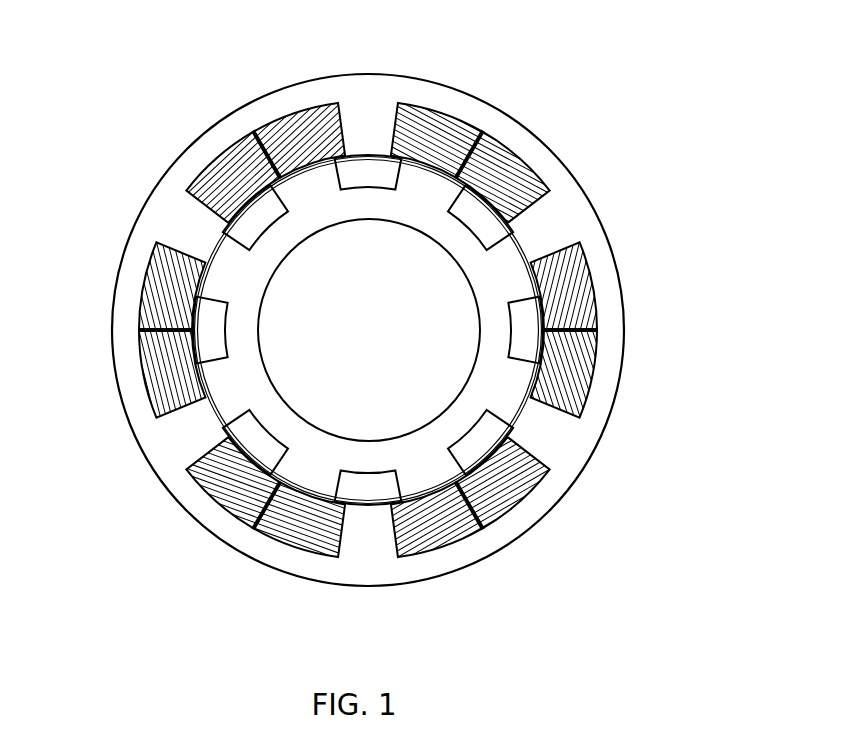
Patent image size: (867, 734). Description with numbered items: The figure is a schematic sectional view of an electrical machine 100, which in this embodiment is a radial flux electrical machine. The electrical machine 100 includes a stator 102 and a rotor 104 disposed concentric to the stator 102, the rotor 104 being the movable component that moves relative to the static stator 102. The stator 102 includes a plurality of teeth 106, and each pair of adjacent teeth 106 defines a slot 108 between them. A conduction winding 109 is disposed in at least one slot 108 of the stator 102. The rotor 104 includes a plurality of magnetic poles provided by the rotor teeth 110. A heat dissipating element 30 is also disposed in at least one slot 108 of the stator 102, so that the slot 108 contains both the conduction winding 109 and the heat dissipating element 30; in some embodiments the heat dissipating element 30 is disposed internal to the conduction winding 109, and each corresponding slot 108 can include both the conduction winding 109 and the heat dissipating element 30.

The electrical machine 100 is at (474, 51).
The stator 102 is at (377, 81).
The rotor 104 is at (370, 219).
The teeth 106 is at (362, 545).
The slot 108 is at (371, 337).
The conduction winding 109 is at (317, 118).
The rotor teeth 110 is at (303, 473).
The heat dissipating element 30 is at (255, 133).